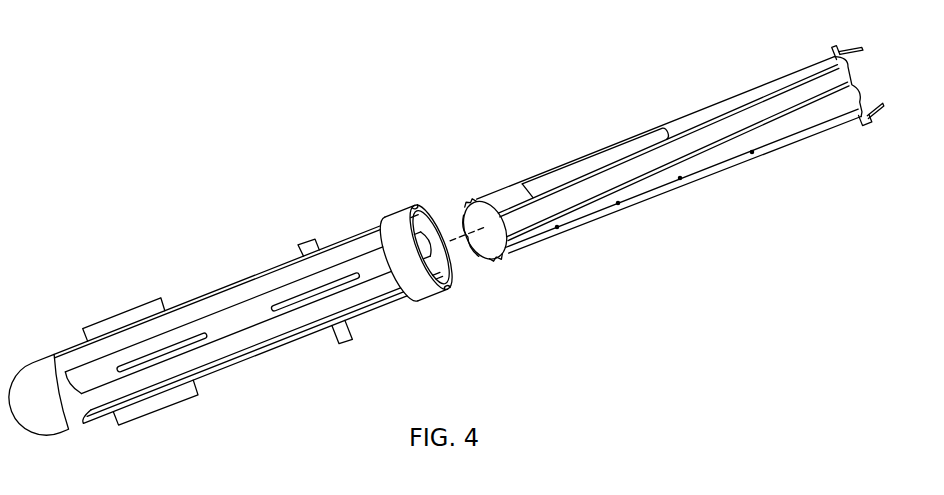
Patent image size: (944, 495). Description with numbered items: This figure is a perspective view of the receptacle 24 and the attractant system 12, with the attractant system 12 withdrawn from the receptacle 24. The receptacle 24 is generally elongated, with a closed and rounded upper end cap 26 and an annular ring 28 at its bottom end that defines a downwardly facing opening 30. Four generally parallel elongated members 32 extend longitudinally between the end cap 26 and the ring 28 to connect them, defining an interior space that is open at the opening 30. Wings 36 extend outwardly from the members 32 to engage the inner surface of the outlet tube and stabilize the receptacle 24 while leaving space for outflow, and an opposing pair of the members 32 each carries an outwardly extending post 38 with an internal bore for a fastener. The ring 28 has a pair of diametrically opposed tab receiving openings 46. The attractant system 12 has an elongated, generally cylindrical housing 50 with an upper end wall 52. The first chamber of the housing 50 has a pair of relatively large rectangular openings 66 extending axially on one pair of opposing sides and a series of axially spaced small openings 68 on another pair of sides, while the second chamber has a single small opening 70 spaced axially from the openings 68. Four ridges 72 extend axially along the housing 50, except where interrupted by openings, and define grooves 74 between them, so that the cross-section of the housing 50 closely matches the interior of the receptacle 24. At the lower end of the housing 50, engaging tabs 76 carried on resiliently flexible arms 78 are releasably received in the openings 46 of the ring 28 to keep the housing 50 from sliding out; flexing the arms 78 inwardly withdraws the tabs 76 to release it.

The attractant system 12 is at (514, 324).
The receptacle 24 is at (185, 301).
The end cap 26 is at (50, 431).
The annular ring 28 is at (428, 216).
The opening 30 is at (423, 278).
The elongated members 32 is at (237, 282).
The wings 36 is at (100, 325).
The post 38 is at (308, 244).
The tab receiving openings 46 is at (416, 206).
The housing 50 is at (703, 111).
The upper end wall 52 is at (505, 251).
The rectangular openings 66 is at (537, 184).
The openings 68 is at (558, 229).
The opening 70 is at (752, 154).
The ridges 72 is at (471, 200).
The grooves 74 is at (474, 200).
The engaging tabs 76 is at (838, 46).
The resiliently flexible arms 78 is at (858, 58).